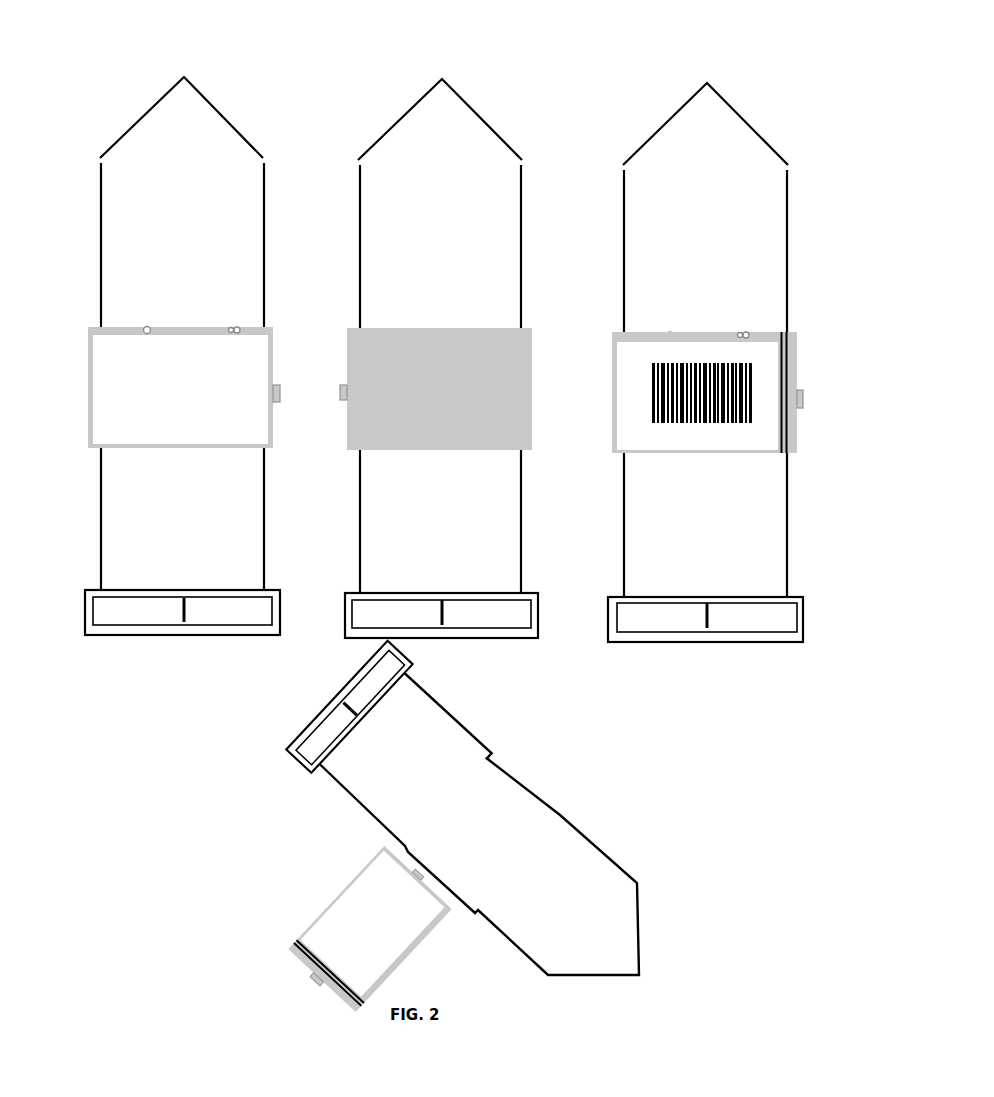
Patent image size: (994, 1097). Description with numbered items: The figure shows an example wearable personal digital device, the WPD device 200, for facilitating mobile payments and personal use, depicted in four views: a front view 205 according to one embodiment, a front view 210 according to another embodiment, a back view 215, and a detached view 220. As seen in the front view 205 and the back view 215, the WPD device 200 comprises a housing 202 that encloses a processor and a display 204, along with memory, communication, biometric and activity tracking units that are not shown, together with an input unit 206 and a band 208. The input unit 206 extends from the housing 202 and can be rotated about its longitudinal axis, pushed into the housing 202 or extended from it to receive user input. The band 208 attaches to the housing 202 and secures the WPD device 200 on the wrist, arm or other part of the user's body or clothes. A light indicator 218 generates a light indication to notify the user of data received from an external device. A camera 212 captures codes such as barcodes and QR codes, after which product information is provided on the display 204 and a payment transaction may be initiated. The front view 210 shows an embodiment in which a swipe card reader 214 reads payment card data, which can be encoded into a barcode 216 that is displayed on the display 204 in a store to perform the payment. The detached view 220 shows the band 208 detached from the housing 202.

The WPD device 200 is at (618, 36).
The housing 202 is at (89, 329).
The display 204 is at (103, 428).
The front view 205 is at (118, 113).
The input unit 206 is at (282, 392).
The band 208 is at (101, 250).
The front view 210 is at (762, 108).
The camera 212 is at (143, 328).
The swipe card reader 214 is at (786, 454).
The back view 215 is at (470, 85).
The barcode 216 is at (730, 363).
The light indicator 218 is at (236, 328).
The detached view 220 is at (622, 797).